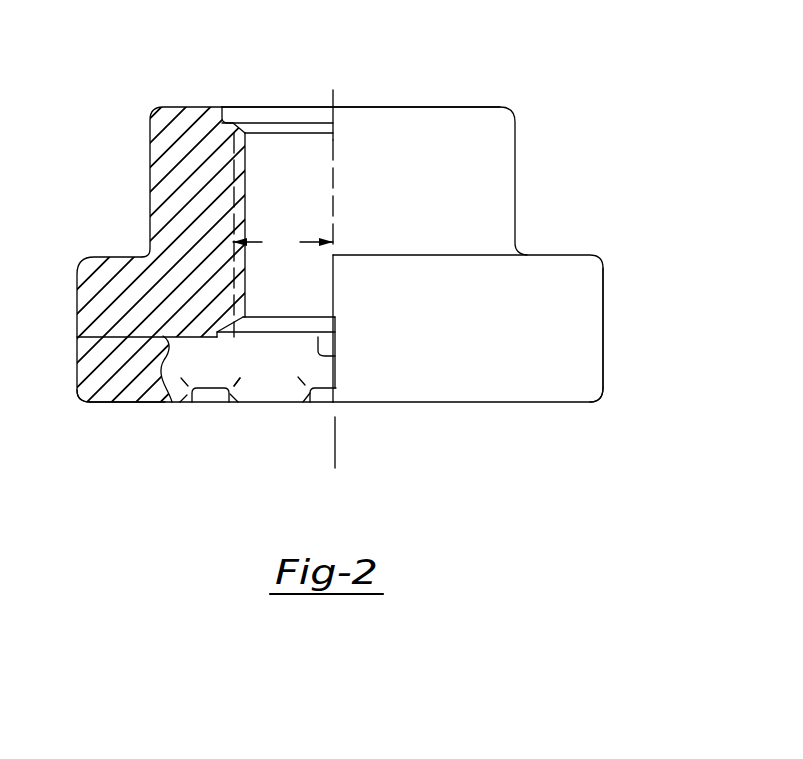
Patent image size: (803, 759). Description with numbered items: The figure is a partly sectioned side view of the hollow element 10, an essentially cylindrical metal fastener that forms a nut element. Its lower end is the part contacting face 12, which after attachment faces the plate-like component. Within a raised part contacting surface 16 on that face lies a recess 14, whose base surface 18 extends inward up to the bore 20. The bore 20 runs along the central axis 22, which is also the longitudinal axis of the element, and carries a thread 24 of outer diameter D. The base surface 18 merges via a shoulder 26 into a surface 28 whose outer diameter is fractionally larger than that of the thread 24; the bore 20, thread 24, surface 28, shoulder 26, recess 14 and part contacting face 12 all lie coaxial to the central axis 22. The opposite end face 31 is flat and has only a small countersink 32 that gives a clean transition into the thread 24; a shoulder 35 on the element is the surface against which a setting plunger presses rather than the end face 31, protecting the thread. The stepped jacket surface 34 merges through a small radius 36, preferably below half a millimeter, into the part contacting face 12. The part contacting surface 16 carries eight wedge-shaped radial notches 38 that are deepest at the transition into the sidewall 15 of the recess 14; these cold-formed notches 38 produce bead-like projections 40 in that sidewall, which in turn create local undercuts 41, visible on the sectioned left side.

The hollow element 10 is at (520, 179).
The part contacting face 12 is at (118, 403).
The recess 14 is at (276, 371).
The sidewall 15 is at (192, 345).
The part contacting surface 16 is at (113, 403).
The base surface 18 is at (330, 355).
The bore 20 is at (246, 162).
The central axis 22 is at (335, 97).
The thread 24 is at (233, 160).
The shoulder 26 is at (251, 385).
The surface 28 is at (227, 333).
The end face 31 is at (417, 107).
The countersink 32 is at (245, 115).
The jacket surface 34 is at (603, 322).
The shoulder 35 is at (120, 257).
The radius 36 is at (593, 401).
The radial notches 38 is at (202, 395).
The bead-like projections 40 is at (168, 375).
The undercuts 41 is at (95, 337).